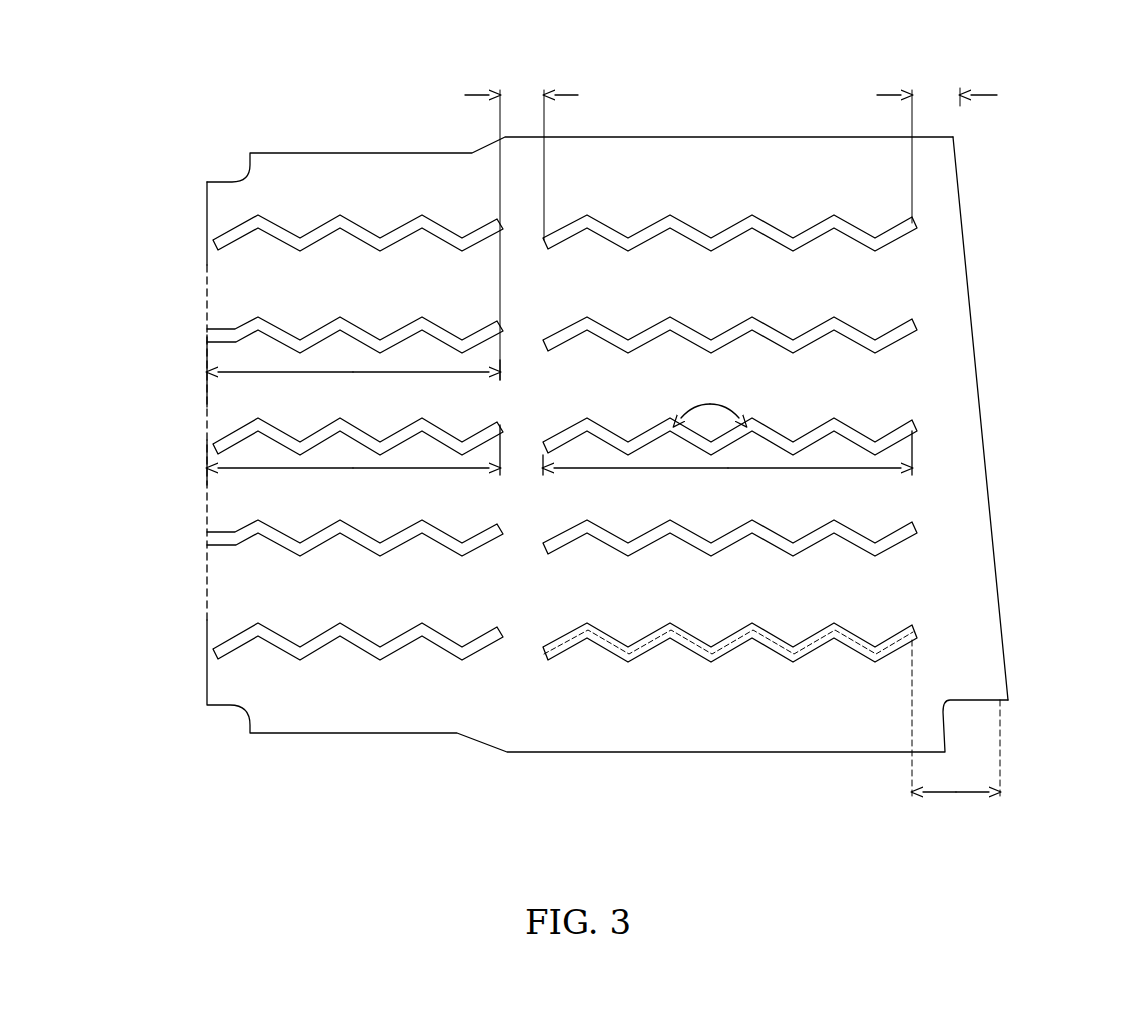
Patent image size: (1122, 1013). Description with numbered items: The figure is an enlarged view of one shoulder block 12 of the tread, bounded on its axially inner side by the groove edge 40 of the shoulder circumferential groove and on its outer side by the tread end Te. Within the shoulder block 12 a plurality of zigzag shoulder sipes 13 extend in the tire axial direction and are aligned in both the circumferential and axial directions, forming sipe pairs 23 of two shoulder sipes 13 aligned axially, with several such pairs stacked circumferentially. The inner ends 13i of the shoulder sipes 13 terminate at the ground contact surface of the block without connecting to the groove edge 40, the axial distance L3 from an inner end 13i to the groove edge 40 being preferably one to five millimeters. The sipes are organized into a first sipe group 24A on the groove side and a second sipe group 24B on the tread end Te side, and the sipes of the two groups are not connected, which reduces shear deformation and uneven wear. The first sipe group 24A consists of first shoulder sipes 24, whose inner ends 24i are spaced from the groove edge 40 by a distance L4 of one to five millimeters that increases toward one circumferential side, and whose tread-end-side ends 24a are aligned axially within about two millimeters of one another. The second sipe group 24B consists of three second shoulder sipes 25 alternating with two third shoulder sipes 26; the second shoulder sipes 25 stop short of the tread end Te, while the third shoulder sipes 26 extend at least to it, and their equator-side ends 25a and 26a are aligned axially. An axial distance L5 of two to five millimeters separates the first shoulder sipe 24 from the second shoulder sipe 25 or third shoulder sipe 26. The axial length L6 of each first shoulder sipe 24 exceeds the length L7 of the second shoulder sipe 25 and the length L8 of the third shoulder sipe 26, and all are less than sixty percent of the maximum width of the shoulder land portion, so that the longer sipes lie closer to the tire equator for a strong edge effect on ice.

The shoulder block 12 is at (280, 101).
The tread end Te is at (200, 202).
The second sipe group 24B is at (361, 193).
The first sipe group 24A is at (714, 193).
The distance between first shoulder sipe and second or third shoulder sipe L5 is at (521, 223).
The distance from inner end to groove edge L3 is at (937, 144).
The inner end of shoulder sipe 13i is at (913, 223).
The shoulder sipe 13 is at (898, 240).
The sipe pair 23 is at (1066, 245).
The inner end of first shoulder sipe 24i is at (915, 323).
The third shoulder sipe 26 is at (320, 330).
The second shoulder sipe 25 is at (320, 428).
The length of third shoulder sipe L8 is at (353, 371).
The length of second shoulder sipe L7 is at (353, 463).
The length of first shoulder sipe L6 is at (727, 466).
The first shoulder sipe 24 is at (562, 533).
The groove edge 40 is at (993, 520).
The end of second shoulder sipe 25a is at (503, 632).
The end of third shoulder sipe 26a is at (502, 528).
The end of first shoulder sipe 24a is at (541, 655).
The distance from inner end of first shoulder sipe to groove edge L4 is at (956, 733).